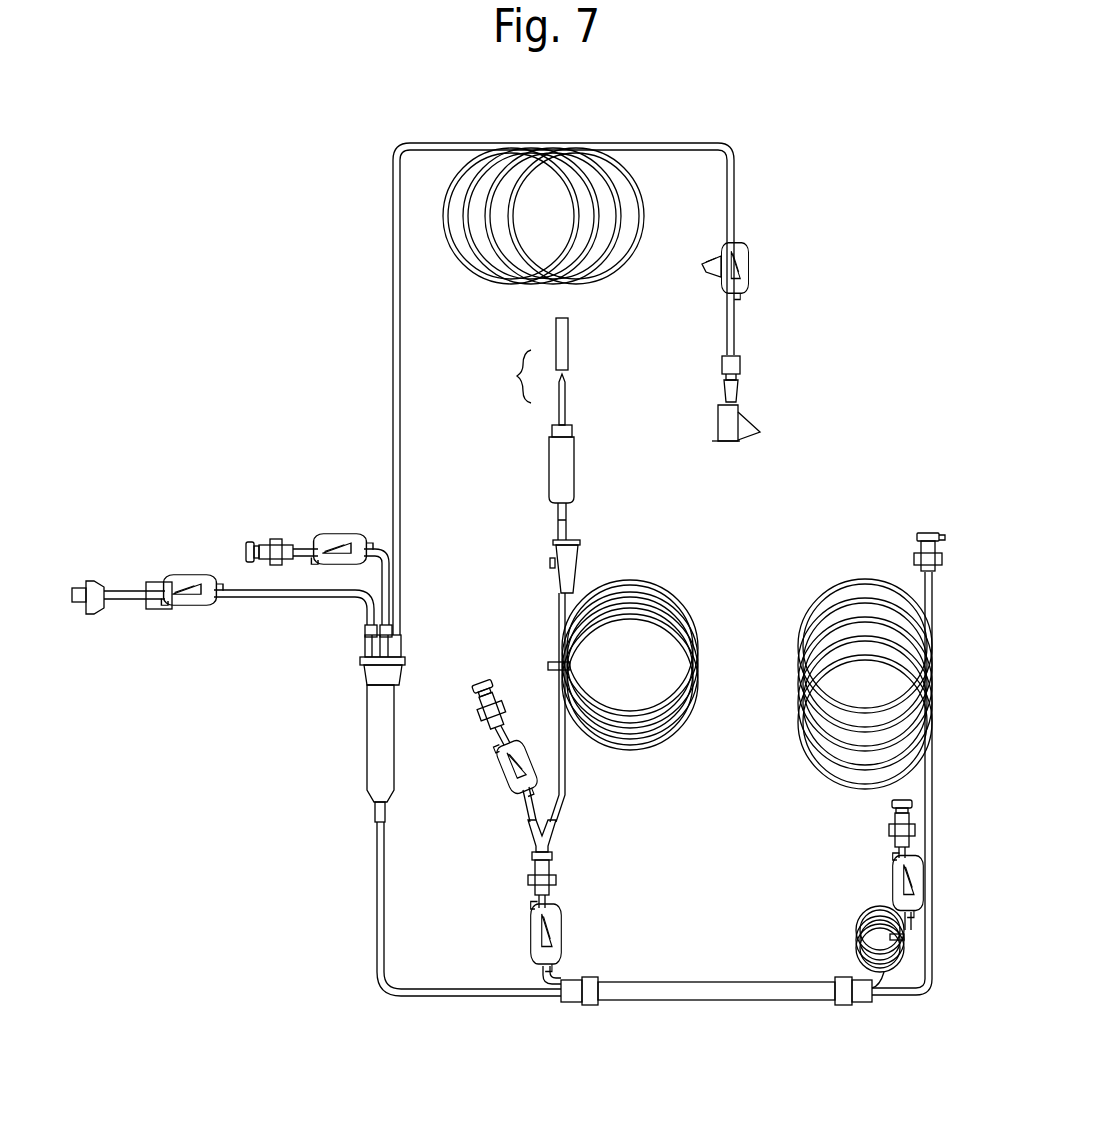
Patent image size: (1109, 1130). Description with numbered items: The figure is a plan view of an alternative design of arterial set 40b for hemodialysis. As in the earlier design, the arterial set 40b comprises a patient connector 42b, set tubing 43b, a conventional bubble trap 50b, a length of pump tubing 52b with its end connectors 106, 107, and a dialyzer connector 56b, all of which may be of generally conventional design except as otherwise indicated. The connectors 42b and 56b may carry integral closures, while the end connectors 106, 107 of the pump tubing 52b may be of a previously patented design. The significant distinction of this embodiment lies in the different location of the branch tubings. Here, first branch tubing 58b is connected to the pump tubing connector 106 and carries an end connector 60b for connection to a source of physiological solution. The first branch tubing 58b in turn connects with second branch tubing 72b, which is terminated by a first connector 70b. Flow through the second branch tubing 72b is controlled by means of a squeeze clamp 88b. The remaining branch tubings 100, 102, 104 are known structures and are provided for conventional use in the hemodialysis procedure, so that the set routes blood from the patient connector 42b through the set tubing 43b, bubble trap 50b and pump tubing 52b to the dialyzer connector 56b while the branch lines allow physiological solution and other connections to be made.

The arterial set 40b is at (362, 896).
The patient connector 42b is at (745, 430).
The set tubing 43b is at (393, 405).
The bubble trap 50b is at (372, 735).
The pump tubing 52b is at (705, 1001).
The dialyzer connector 56b is at (917, 552).
The first branch tubing 58b is at (550, 905).
The end connector 60b is at (566, 395).
The first connector 70b is at (480, 688).
The second branch tubing 72b is at (523, 815).
The squeeze clamp 88b is at (504, 772).
The branch tubing 100 is at (905, 918).
The branch tubing 102 is at (307, 545).
The branch tubing 104 is at (258, 600).
The pump tubing connector 106 is at (593, 1006).
The pump tubing connector 107 is at (845, 1006).